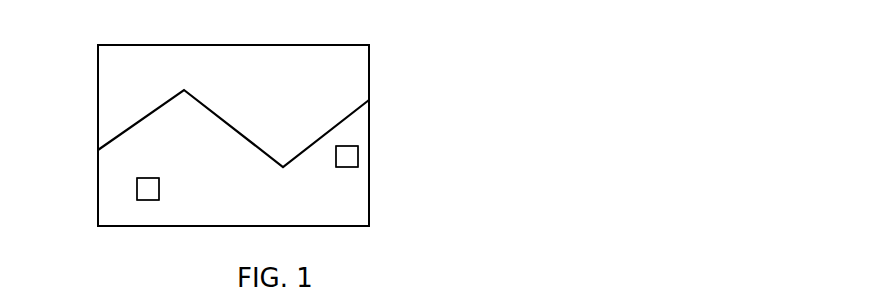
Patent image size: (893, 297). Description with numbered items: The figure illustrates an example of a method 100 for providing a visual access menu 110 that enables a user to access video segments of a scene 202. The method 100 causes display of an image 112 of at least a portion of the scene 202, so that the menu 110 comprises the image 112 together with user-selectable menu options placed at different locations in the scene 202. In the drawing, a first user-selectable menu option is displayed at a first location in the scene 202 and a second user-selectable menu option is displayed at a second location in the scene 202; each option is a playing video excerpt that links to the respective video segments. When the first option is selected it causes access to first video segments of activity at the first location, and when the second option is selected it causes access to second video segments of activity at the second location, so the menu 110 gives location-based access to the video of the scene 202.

The method 100 is at (472, 67).
The visual access menu 110 is at (108, 74).
The image 112 is at (360, 67).
The scene 202 is at (98, 181).